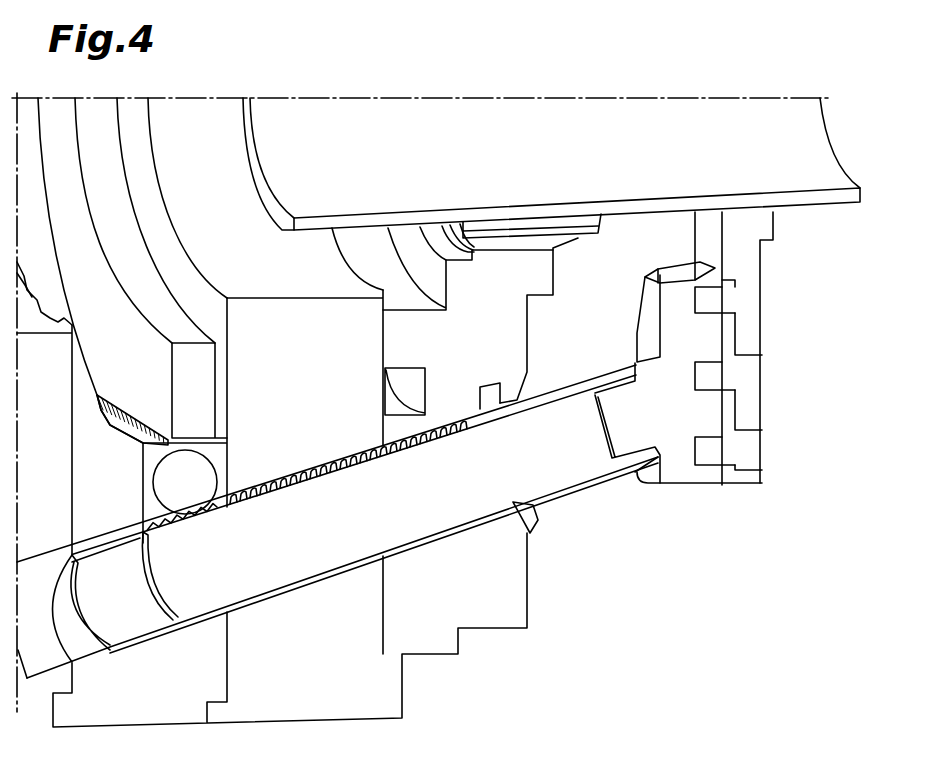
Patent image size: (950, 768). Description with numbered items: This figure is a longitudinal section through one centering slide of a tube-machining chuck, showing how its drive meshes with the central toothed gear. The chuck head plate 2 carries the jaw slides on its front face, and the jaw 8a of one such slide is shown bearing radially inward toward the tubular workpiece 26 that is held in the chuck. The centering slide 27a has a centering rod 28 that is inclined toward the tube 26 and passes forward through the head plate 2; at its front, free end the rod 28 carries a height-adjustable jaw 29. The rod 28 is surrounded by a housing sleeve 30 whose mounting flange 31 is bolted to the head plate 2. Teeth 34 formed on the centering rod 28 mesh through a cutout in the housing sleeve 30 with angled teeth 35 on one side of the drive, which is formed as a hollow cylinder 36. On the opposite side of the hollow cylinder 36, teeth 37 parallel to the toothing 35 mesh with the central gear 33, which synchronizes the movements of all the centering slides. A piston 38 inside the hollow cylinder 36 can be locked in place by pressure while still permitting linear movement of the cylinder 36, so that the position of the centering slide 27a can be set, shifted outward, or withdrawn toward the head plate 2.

The head plate 2 is at (497, 330).
The jaw 8a is at (582, 224).
The tubular workpiece 26 is at (840, 198).
The centering slide 27a is at (604, 497).
The centering rod 28 is at (433, 505).
The height-adjustable jaw 29 is at (748, 337).
The housing sleeve 30 is at (217, 608).
The mounting flange 31 is at (533, 533).
The central gear 33 is at (187, 380).
The teeth 34 is at (350, 467).
The angled teeth 35 is at (172, 527).
The hollow cylinder 36 is at (217, 452).
The teeth 37 is at (113, 410).
The piston 38 is at (183, 488).